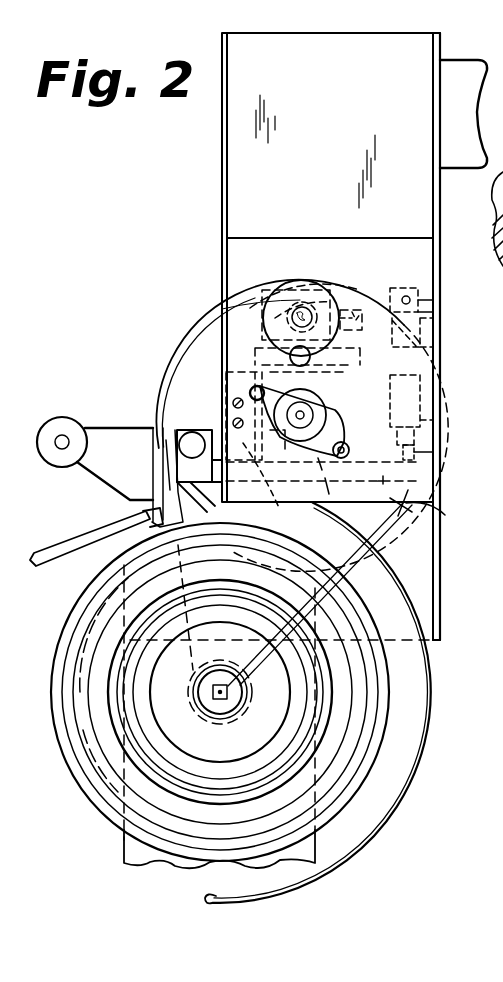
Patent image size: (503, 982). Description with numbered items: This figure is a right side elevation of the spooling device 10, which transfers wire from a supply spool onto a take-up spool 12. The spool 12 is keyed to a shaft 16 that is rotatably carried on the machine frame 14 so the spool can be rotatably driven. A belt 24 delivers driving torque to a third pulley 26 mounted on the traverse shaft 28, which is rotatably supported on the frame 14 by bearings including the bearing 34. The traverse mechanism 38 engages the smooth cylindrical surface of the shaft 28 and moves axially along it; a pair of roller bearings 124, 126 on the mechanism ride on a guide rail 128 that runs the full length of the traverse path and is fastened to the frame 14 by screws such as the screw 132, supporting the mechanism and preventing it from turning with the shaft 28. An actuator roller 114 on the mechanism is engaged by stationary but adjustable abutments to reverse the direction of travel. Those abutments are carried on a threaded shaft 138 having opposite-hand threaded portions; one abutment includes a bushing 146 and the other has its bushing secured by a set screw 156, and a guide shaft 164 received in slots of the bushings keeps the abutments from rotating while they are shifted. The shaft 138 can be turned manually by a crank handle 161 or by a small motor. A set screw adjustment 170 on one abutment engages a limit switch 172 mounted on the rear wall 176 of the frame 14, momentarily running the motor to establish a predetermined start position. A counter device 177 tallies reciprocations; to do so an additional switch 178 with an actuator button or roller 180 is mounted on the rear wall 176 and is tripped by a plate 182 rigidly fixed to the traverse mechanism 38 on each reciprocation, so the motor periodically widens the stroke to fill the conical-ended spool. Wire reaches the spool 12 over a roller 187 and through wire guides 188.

The spooling device 10 is at (141, 381).
The take-up spool 12 is at (92, 810).
The machine frame 14 is at (212, 178).
The shaft 16 is at (222, 700).
The belt 24 is at (358, 560).
The third pulley 26 is at (196, 335).
The traverse shaft 28 is at (304, 415).
The bearing 34 is at (290, 438).
The traverse mechanism 38 is at (351, 411).
The actuator roller 114 is at (366, 343).
The roller bearing 124 is at (233, 366).
The roller bearing 126 is at (284, 490).
The guide rail 128 is at (232, 385).
The screw 132 is at (232, 424).
The threaded shaft 138 is at (300, 312).
The bushing 146 is at (278, 320).
The set screw 156 is at (282, 322).
The crank handle 161 is at (222, 309).
The guide shaft 164 is at (393, 308).
The set screw adjustment 170 is at (441, 329).
The limit switch 172 is at (420, 286).
The rear wall 176 is at (433, 358).
The counter device 177 is at (453, 63).
The additional switch 178 is at (452, 398).
The actuator button or roller 180 is at (433, 452).
The plate 182 is at (425, 520).
The roller 187 is at (62, 417).
The wire guides 188 is at (69, 545).